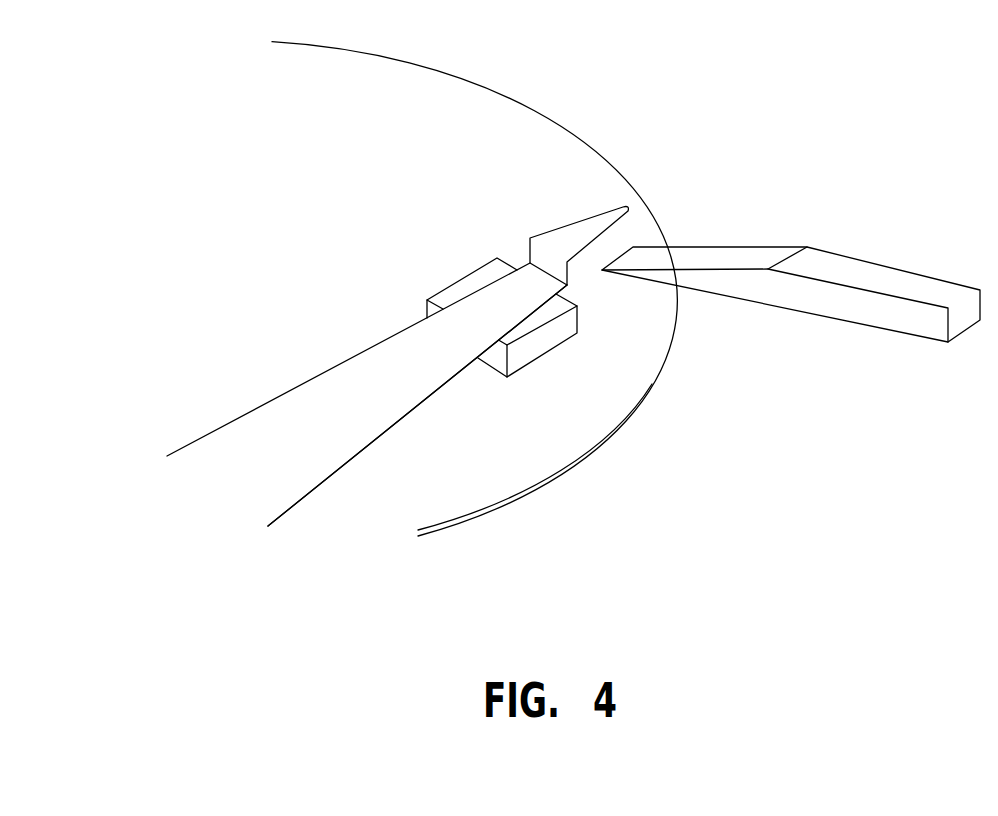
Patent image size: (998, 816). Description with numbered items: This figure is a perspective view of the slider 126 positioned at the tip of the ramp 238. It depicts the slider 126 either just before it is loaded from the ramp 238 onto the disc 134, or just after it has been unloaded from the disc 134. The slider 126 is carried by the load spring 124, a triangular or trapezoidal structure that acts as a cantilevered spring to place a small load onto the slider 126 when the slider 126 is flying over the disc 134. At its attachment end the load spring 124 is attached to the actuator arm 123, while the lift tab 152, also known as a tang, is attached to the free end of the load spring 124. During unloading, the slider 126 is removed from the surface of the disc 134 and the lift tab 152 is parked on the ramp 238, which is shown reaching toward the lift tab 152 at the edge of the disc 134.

The actuator arm 123 is at (237, 502).
The load spring 124 is at (225, 430).
The slider 126 is at (542, 357).
The disc 134 is at (563, 443).
The lift tab 152 is at (577, 222).
The ramp 238 is at (845, 321).